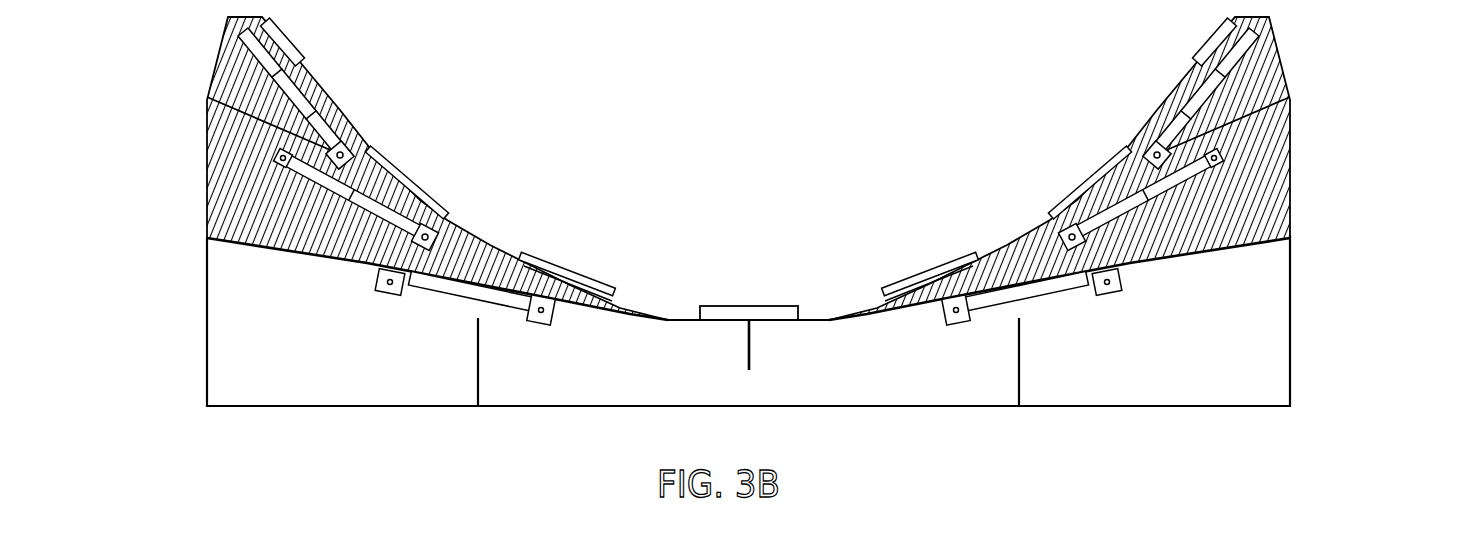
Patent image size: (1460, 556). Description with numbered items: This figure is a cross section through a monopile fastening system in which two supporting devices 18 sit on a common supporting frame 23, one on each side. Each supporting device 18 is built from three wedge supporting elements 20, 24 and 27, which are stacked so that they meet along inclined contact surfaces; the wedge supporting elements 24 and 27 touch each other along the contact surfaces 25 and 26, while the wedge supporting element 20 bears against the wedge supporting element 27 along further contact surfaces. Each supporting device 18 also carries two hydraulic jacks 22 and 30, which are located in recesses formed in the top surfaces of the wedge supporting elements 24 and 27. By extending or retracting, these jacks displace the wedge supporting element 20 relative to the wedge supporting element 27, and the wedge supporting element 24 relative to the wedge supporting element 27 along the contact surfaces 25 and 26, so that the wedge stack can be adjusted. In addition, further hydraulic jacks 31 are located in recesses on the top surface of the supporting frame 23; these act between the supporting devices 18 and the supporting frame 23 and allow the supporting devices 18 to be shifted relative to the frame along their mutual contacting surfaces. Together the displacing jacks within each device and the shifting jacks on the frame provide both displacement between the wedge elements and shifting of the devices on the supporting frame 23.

The supporting device 18 is at (205, 5).
The wedge supporting element 20 is at (267, 18).
The hydraulic jack 22 is at (321, 117).
The supporting frame 23 is at (381, 336).
The wedge supporting element 24 is at (229, 195).
The contact surface 25 is at (235, 131).
The contact surface 26 is at (271, 111).
The wedge supporting element 27 is at (228, 77).
The hydraulic jack 30 is at (372, 201).
The hydraulic jack 31 is at (532, 287).